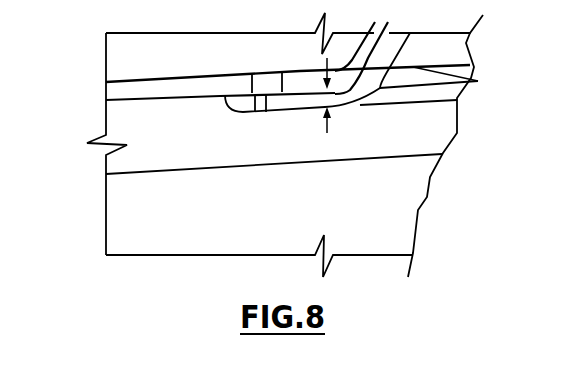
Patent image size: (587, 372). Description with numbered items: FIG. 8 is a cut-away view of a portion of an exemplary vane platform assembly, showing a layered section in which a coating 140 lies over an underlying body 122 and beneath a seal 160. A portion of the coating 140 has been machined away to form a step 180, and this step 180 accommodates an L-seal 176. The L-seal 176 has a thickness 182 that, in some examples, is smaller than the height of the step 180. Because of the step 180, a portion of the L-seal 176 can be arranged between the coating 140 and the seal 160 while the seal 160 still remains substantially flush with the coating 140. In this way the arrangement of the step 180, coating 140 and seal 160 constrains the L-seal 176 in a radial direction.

The base layer 122 is at (113, 219).
The coating 140 is at (113, 121).
The seal 160 is at (113, 90).
The L-seal 176 is at (480, 81).
The step 180 is at (248, 112).
The thickness 182 is at (327, 133).